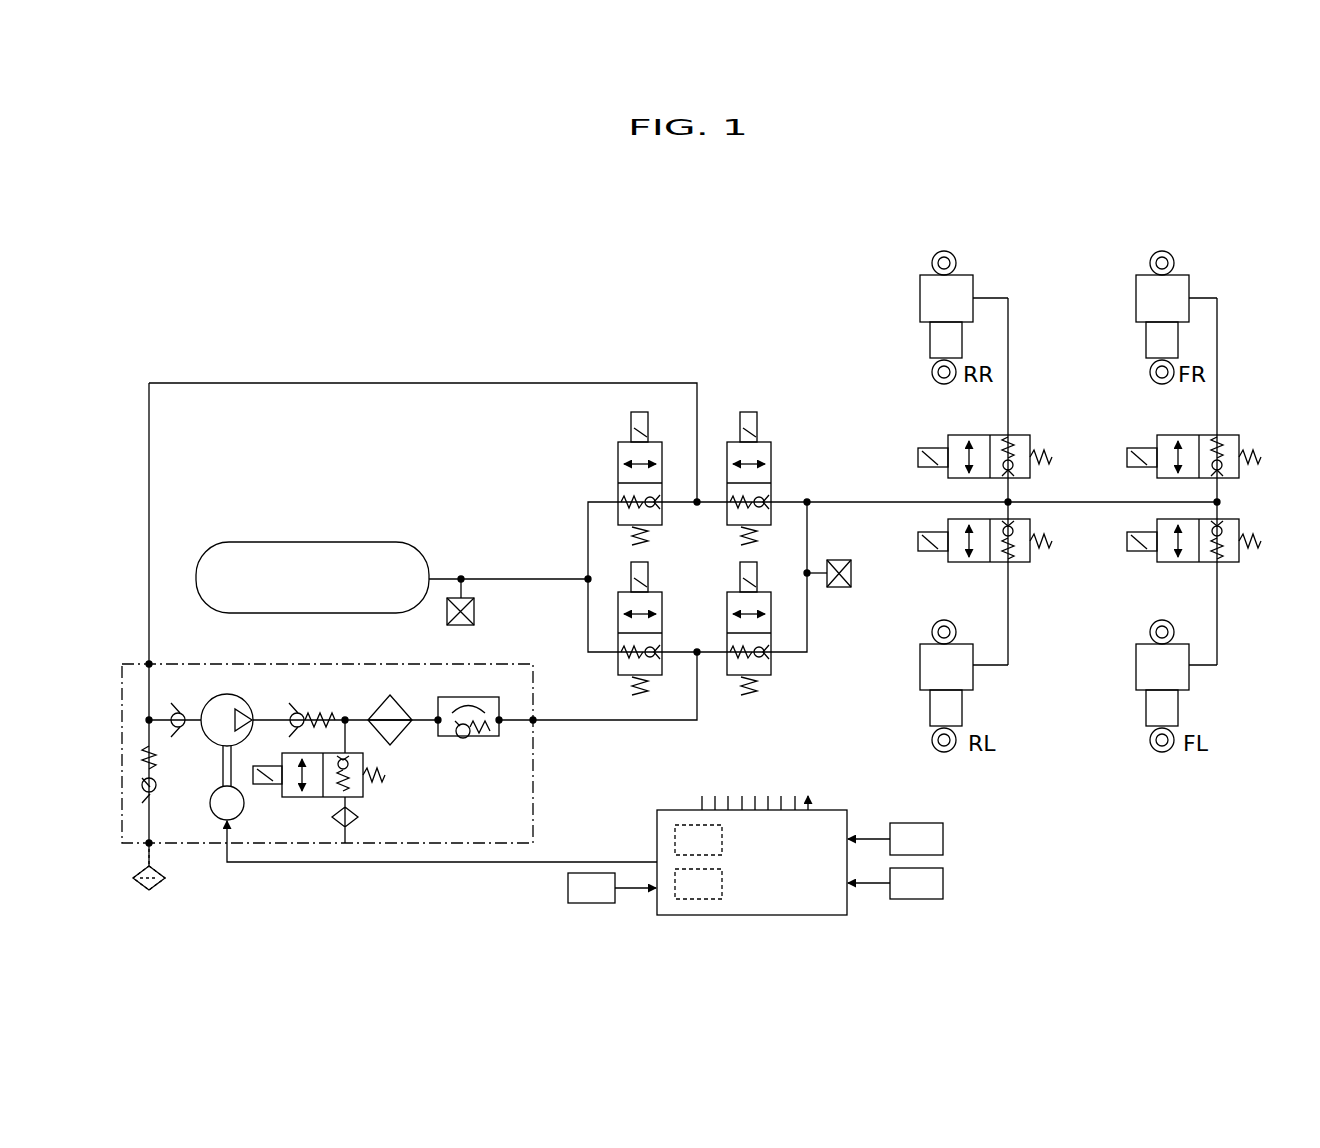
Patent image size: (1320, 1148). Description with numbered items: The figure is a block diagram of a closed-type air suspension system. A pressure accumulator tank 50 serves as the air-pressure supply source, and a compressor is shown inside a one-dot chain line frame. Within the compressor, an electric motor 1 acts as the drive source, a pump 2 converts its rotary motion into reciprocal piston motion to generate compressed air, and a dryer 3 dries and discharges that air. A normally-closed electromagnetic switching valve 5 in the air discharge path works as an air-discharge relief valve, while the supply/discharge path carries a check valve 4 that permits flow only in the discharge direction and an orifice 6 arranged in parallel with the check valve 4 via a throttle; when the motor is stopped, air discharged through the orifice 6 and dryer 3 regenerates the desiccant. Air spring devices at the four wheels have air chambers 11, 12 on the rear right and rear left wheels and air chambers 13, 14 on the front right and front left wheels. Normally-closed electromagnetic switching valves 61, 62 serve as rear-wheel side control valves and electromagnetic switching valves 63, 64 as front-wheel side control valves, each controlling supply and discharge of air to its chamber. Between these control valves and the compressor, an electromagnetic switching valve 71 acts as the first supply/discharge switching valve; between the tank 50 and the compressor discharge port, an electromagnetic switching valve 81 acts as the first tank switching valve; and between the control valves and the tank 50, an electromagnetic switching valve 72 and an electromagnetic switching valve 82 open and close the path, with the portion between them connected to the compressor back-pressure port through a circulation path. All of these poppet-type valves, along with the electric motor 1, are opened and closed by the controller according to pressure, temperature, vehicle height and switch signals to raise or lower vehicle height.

The electric motor 1 is at (244, 807).
The pump 2 is at (240, 696).
The dryer 3 is at (403, 730).
The check valve 4 is at (465, 742).
The electromagnetic switching valve 5 is at (355, 797).
The orifice 6 is at (483, 685).
The air chamber 11 is at (957, 287).
The air chamber 12 is at (960, 678).
The air chamber 13 is at (1173, 287).
The air chamber 14 is at (1175, 678).
The pressure accumulator tank 50 is at (320, 542).
The electromagnetic switching valve 61 is at (960, 434).
The electromagnetic switching valve 62 is at (960, 565).
The electromagnetic switching valve 63 is at (1170, 434).
The electromagnetic switching valve 64 is at (1170, 565).
The electromagnetic switching valve 71 is at (772, 665).
The electromagnetic switching valve 72 is at (771, 447).
The electromagnetic switching valve 81 is at (620, 660).
The electromagnetic switching valve 82 is at (617, 450).